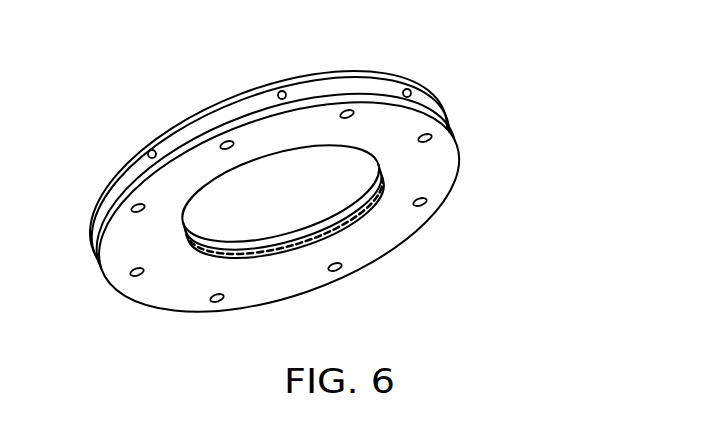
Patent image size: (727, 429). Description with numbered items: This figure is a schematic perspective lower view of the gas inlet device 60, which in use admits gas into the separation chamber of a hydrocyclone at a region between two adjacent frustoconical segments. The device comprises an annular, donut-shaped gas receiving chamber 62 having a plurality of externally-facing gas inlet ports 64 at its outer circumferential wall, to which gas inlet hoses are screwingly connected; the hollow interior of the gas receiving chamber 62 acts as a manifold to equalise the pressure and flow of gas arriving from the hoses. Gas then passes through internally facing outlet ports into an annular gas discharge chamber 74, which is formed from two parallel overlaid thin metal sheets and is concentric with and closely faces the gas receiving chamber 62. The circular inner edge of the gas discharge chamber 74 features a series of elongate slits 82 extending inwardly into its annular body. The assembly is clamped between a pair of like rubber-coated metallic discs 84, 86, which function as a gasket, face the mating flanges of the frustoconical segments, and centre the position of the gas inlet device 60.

The gas inlet device 60 is at (332, 186).
The gas receiving chamber 62 is at (343, 88).
The gas inlet ports 64 is at (148, 154).
The gas discharge chamber 74 is at (203, 253).
The elongate slits 82 is at (315, 232).
The metallic disc 84 is at (197, 114).
The metallic disc 86 is at (374, 240).